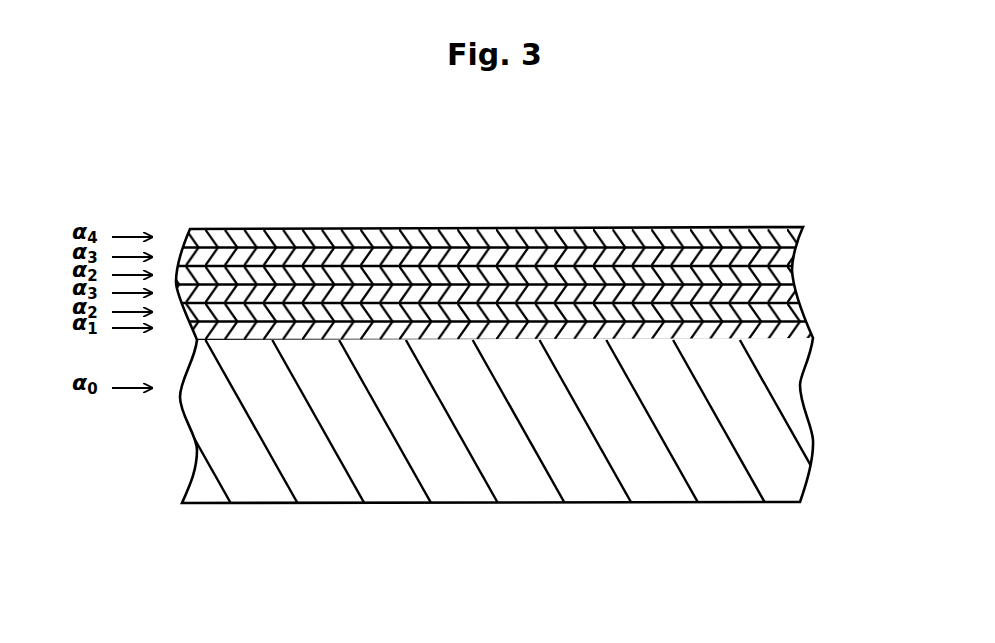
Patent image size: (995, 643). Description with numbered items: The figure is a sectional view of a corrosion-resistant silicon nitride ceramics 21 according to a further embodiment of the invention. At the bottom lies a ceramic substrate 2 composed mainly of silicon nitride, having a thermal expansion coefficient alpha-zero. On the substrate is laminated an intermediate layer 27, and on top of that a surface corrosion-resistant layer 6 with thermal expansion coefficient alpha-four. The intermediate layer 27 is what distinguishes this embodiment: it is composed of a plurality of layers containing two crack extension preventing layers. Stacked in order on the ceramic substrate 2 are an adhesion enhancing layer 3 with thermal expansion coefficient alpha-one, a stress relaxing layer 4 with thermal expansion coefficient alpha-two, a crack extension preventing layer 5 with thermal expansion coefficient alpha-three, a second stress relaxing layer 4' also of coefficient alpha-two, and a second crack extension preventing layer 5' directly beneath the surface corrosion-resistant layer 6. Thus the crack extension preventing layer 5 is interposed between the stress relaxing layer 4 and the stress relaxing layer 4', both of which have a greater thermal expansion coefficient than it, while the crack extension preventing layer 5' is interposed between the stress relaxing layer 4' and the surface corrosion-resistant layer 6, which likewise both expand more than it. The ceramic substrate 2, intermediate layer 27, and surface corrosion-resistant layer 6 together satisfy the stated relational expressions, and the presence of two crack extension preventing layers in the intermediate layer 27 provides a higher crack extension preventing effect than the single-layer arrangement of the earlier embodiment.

The corrosion-resistant silicon nitride ceramics 21 is at (670, 190).
The ceramic substrate 2 is at (788, 390).
The adhesion enhancing layer 3 is at (810, 340).
The stress relaxing layer 4 is at (520, 312).
The crack extension preventing layer 5 is at (520, 294).
The stress relaxing layer 4' is at (524, 271).
The crack extension preventing layer 5' is at (524, 250).
The surface corrosion-resistant layer 6 is at (802, 229).
The intermediate layer 27 is at (890, 243).